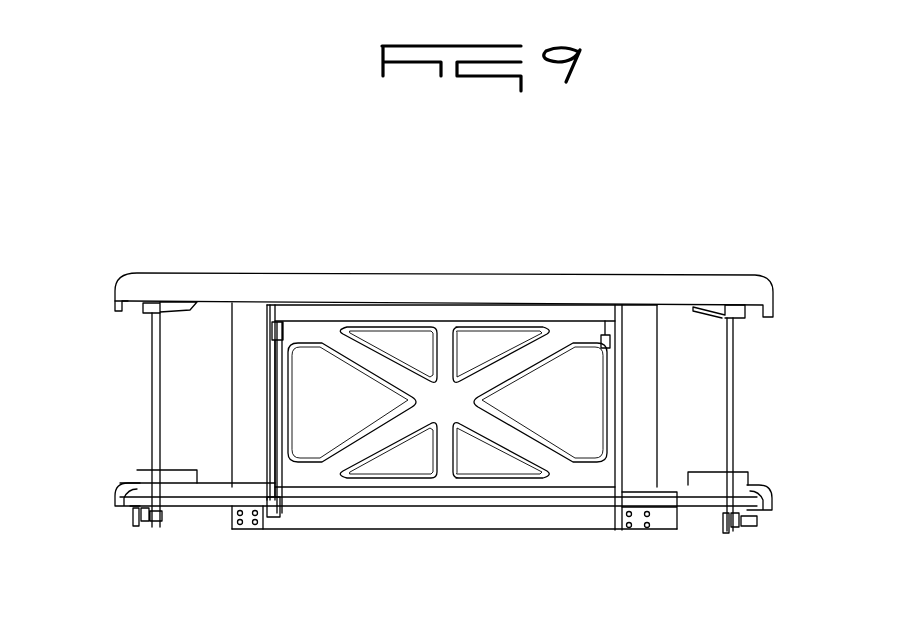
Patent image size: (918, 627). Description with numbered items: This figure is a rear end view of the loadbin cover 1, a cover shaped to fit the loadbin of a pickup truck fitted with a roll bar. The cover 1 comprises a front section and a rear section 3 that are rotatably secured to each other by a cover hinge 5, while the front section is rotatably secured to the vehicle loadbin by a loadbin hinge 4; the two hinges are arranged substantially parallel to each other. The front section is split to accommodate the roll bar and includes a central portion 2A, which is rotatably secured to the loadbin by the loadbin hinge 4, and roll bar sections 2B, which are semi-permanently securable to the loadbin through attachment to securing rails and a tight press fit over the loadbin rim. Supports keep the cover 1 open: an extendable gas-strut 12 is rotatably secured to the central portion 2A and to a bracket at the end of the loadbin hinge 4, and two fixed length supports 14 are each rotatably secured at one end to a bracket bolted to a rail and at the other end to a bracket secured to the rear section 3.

The loadbin cover 1 is at (829, 443).
The central portion 2A is at (603, 430).
The roll bar sections 2B is at (115, 492).
The rear section 3 is at (722, 289).
The loadbin hinge 4 is at (573, 513).
The cover hinge 5 is at (567, 313).
The gas-strut 12 is at (283, 410).
The fixed length supports 14 is at (152, 350).